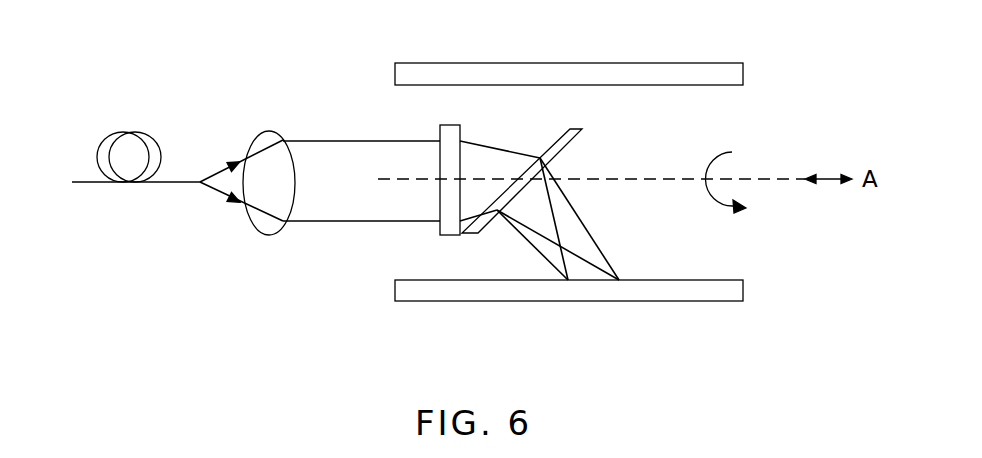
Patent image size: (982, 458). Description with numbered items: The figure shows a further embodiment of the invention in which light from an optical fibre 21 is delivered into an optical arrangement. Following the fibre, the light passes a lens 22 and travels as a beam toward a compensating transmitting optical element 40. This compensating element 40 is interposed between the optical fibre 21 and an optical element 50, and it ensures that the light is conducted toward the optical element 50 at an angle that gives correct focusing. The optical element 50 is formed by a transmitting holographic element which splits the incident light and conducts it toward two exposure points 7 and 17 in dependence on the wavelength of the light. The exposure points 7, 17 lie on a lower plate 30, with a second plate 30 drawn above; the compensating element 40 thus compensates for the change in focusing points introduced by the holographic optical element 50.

The optical fibre 21 is at (98, 148).
The collimating lens 22 is at (277, 132).
The compensating transmitting optical element 40 is at (440, 132).
The optical element 50 is at (575, 143).
The plate 30 is at (442, 62).
The exposure point 7 is at (568, 282).
The exposure point 17 is at (619, 282).